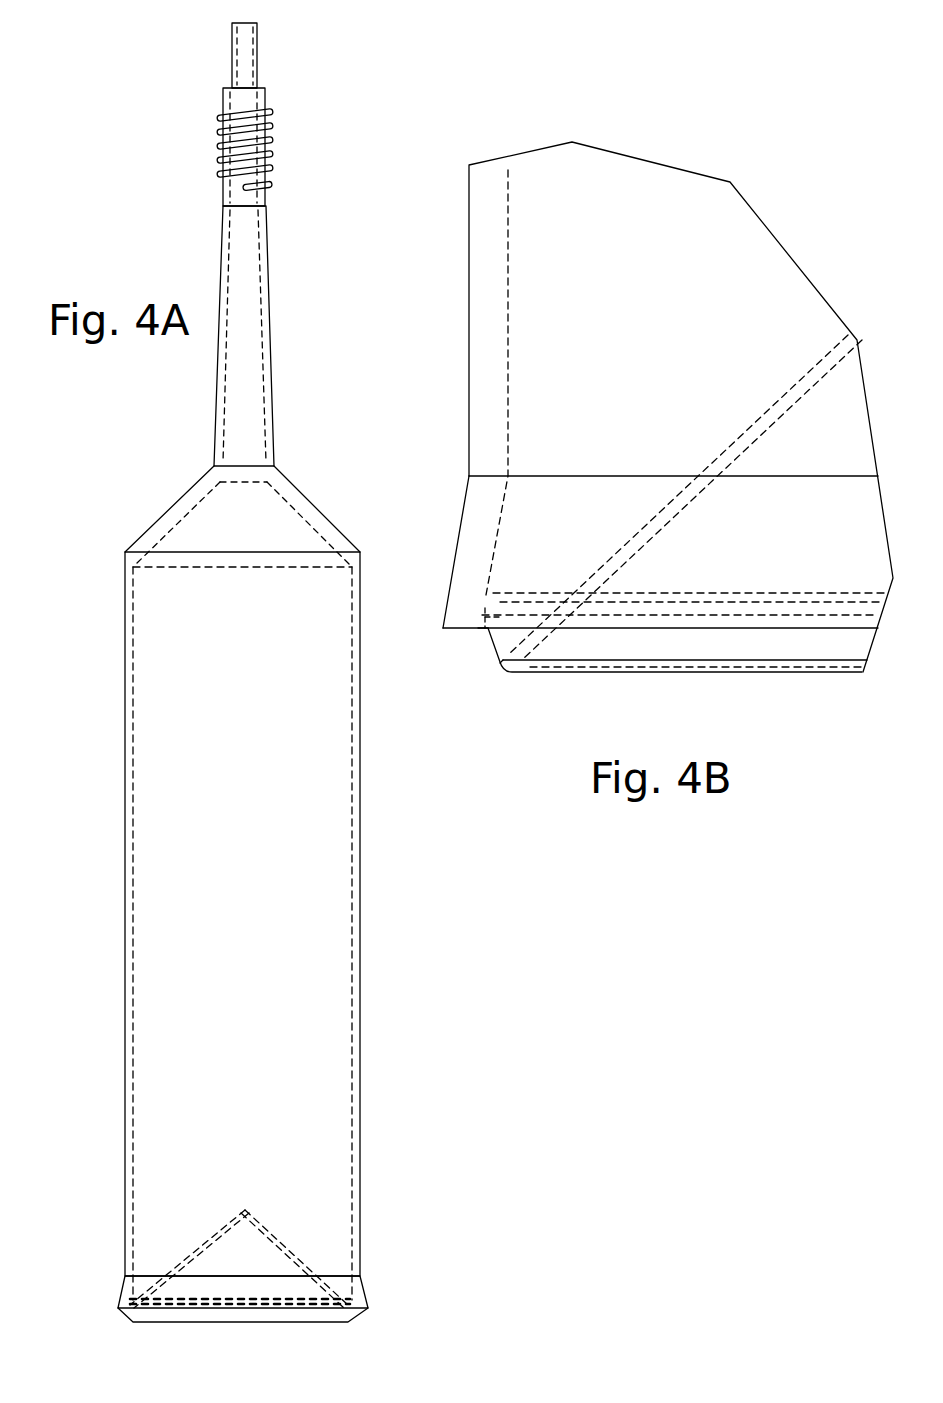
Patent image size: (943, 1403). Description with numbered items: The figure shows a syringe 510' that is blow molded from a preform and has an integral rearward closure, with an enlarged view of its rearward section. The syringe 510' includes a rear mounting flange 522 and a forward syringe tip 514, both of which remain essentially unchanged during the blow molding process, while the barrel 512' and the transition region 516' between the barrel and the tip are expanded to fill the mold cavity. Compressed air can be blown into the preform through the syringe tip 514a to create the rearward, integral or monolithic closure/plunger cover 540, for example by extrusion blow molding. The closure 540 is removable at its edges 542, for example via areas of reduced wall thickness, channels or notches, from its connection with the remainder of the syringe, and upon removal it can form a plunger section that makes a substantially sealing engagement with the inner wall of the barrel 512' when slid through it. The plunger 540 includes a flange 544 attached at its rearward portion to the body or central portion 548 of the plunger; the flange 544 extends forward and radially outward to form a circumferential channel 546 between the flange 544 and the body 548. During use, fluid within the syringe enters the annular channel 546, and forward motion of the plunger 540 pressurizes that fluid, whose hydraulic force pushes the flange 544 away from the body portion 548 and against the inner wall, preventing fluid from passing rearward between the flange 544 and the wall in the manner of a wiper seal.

In FIG. 4A, the syringe 510' is at (370, 914).
In FIG. 4A, the barrel 512' is at (201, 933).
In FIG. 4B, the barrel 512' is at (649, 407).
In FIG. 4A, the forward syringe tip 514 is at (287, 315).
In FIG. 4A, the syringe tip 514a is at (278, 58).
In FIG. 4A, the transition region 516' is at (220, 503).
In FIG. 4A, the rear mounting flange 522 is at (372, 1298).
In FIG. 4B, the rear mounting flange 522 is at (450, 553).
In FIG. 4A, the closure/plunger cover 540 is at (297, 1238).
In FIG. 4B, the closure/plunger cover 540 is at (712, 508).
In FIG. 4B, the edges 542 is at (487, 608).
In FIG. 4B, the flange 544 is at (500, 643).
In FIG. 4B, the circumferential channel 546 is at (515, 633).
In FIG. 4B, the body or central portion 548 is at (603, 545).